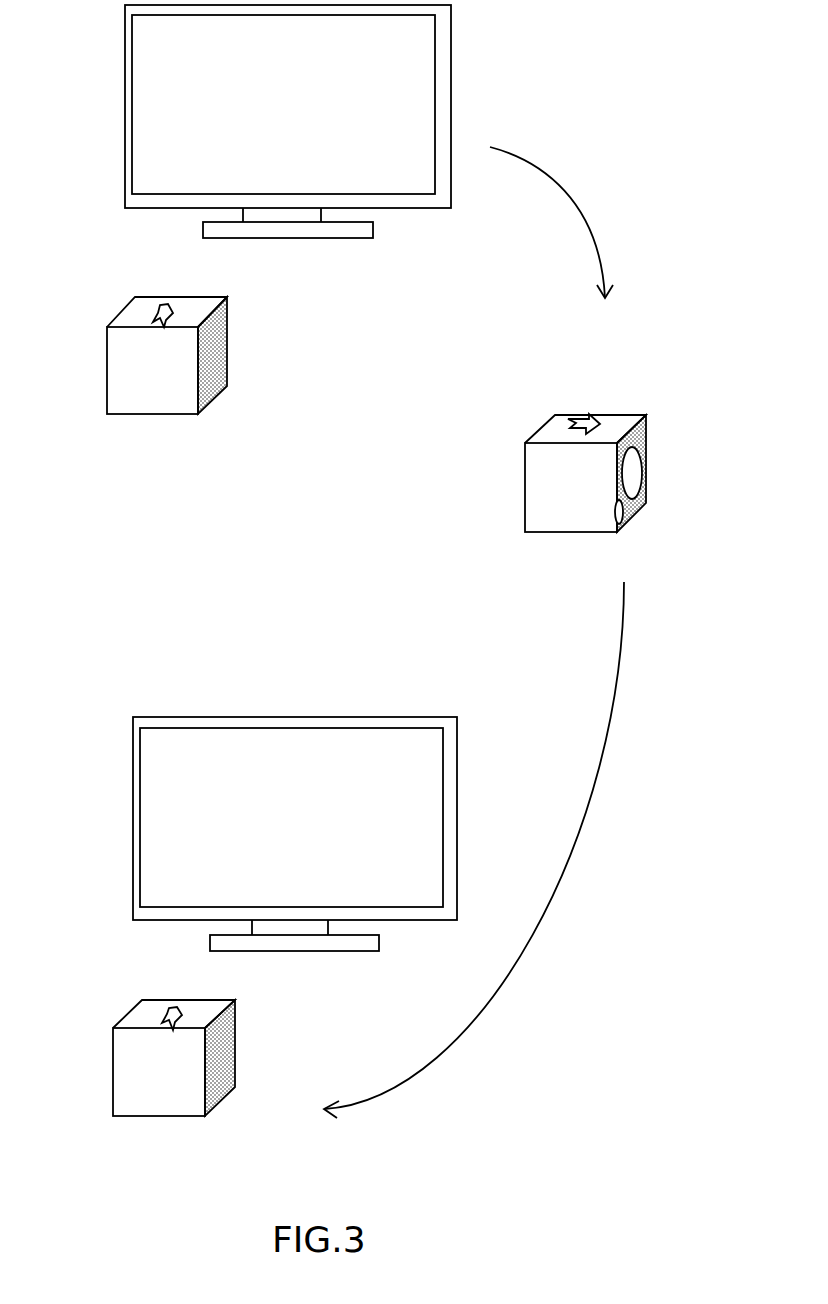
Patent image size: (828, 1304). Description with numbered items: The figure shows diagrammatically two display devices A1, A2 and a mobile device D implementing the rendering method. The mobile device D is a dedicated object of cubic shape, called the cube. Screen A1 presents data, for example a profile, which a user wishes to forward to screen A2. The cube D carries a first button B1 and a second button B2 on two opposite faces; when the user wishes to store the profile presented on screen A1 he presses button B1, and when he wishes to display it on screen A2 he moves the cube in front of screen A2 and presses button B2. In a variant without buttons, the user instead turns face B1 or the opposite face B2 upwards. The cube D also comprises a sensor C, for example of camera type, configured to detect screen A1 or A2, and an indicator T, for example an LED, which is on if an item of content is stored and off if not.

The display device A1 is at (441, 53).
The display device A2 is at (449, 803).
The first button B1 is at (152, 313).
The second button B2 is at (582, 533).
The sensor C is at (630, 477).
The indicator T is at (618, 517).
The mobile device D is at (222, 403).